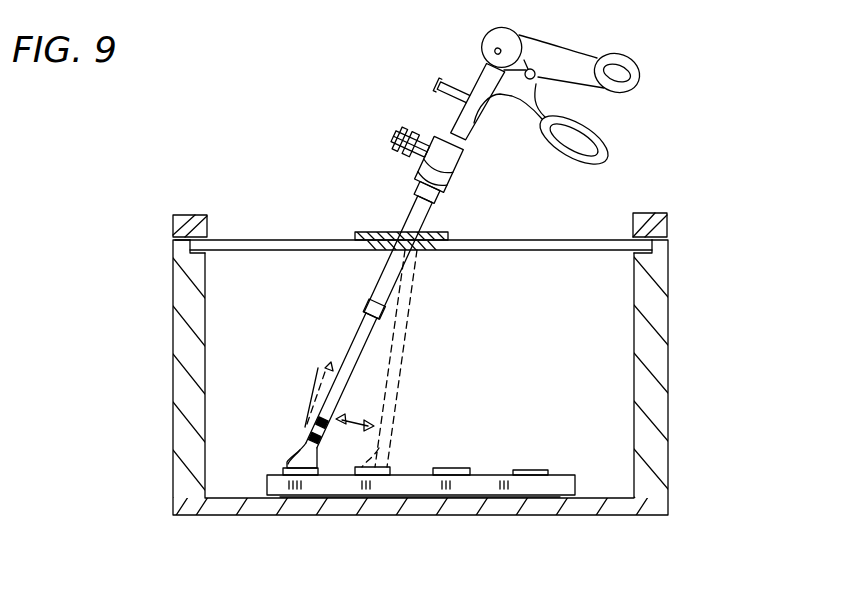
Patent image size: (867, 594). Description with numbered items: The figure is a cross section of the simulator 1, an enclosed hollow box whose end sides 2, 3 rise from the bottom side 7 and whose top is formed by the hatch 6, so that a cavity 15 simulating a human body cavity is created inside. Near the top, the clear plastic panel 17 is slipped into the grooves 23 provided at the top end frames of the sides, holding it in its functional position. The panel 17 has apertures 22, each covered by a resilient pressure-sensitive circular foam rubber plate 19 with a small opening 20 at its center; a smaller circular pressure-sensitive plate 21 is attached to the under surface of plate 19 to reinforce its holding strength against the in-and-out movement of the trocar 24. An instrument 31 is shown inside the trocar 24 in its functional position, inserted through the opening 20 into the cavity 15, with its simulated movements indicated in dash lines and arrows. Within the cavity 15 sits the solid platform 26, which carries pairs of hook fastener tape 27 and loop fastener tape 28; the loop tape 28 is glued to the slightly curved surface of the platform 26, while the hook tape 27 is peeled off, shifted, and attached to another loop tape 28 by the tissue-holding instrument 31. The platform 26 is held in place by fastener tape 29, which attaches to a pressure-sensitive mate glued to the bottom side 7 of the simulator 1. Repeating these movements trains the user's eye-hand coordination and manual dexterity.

The simulator 1 is at (165, 343).
The end side 2 is at (668, 383).
The end side 3 is at (173, 480).
The hatch 6 is at (180, 215).
The bottom side 7 is at (447, 517).
The cavity 15 is at (237, 482).
The plastic panel 17 is at (283, 238).
The foam rubber plate 19 is at (446, 222).
The small opening 20 is at (383, 233).
The smaller circular pressure sensitive plate 21 is at (423, 252).
The aperture 22 is at (368, 247).
The groove 23 is at (197, 253).
The trocar 24 is at (430, 150).
The platform 26 is at (577, 478).
The hook fastener tape 27 is at (300, 462).
The loop fastener tape 28 is at (285, 471).
The fastener tape 29 is at (327, 498).
The instrument 31 is at (533, 45).